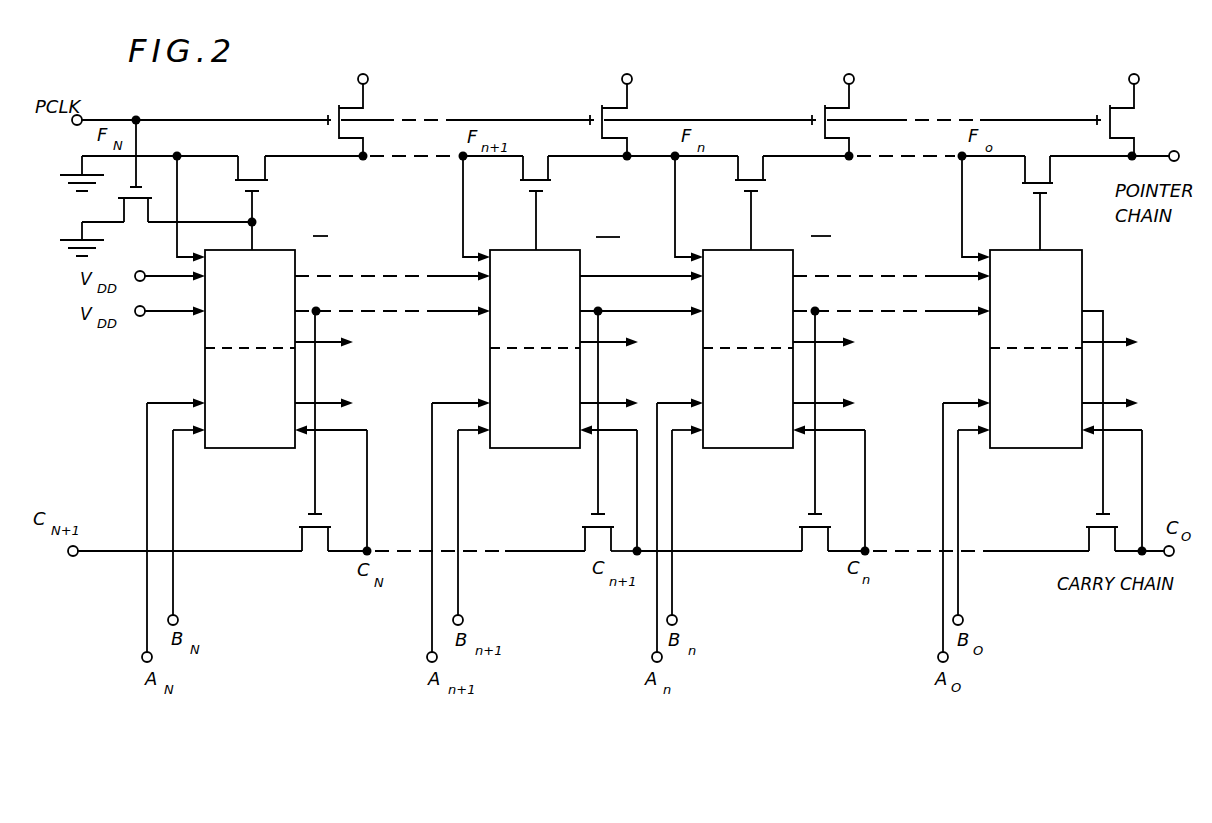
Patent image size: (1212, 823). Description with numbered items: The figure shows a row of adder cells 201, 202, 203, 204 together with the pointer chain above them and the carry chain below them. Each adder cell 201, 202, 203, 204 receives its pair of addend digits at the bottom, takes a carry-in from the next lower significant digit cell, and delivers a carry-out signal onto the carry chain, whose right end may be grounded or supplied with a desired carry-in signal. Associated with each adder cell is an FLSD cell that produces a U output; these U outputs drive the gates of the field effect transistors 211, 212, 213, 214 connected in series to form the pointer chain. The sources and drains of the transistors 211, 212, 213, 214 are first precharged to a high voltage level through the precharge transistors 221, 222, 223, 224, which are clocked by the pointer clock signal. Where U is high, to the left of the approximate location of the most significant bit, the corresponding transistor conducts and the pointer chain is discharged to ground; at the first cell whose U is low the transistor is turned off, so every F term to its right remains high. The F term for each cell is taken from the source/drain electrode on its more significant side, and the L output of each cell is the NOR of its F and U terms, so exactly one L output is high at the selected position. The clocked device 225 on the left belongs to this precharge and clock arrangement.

The adder cell 201 is at (985, 375).
The adder cell 202 is at (753, 449).
The adder cell 203 is at (487, 352).
The adder cell 204 is at (212, 362).
The pointer chain field effect transistor 211 is at (1072, 175).
The pointer chain field effect transistor 212 is at (766, 181).
The pointer chain field effect transistor 213 is at (547, 173).
The pointer chain field effect transistor 214 is at (266, 181).
The precharge transistor 221 is at (1130, 115).
The precharge transistor 222 is at (846, 115).
The precharge transistor 223 is at (624, 112).
The precharge transistor 224 is at (358, 118).
The PCLK clock transistor 225 is at (133, 228).